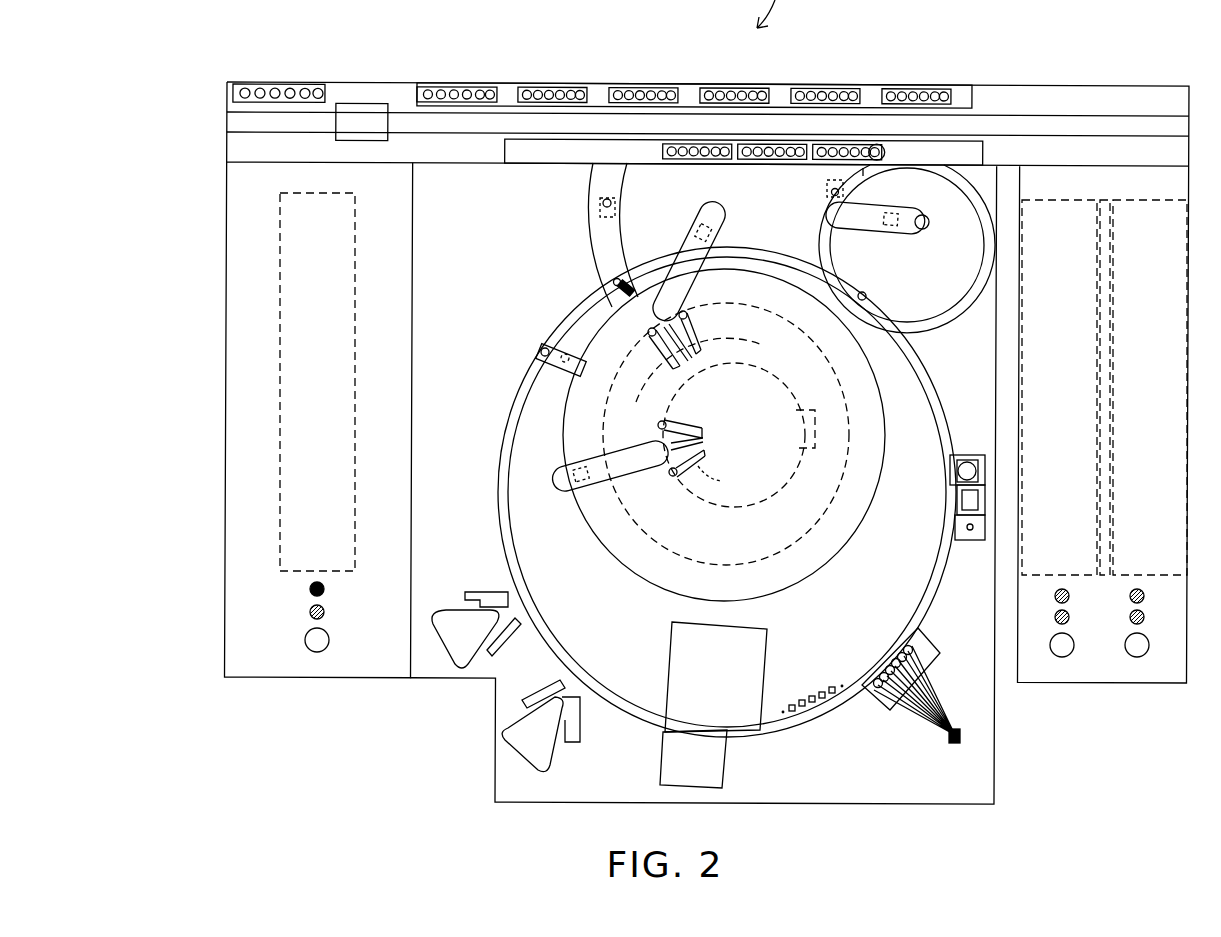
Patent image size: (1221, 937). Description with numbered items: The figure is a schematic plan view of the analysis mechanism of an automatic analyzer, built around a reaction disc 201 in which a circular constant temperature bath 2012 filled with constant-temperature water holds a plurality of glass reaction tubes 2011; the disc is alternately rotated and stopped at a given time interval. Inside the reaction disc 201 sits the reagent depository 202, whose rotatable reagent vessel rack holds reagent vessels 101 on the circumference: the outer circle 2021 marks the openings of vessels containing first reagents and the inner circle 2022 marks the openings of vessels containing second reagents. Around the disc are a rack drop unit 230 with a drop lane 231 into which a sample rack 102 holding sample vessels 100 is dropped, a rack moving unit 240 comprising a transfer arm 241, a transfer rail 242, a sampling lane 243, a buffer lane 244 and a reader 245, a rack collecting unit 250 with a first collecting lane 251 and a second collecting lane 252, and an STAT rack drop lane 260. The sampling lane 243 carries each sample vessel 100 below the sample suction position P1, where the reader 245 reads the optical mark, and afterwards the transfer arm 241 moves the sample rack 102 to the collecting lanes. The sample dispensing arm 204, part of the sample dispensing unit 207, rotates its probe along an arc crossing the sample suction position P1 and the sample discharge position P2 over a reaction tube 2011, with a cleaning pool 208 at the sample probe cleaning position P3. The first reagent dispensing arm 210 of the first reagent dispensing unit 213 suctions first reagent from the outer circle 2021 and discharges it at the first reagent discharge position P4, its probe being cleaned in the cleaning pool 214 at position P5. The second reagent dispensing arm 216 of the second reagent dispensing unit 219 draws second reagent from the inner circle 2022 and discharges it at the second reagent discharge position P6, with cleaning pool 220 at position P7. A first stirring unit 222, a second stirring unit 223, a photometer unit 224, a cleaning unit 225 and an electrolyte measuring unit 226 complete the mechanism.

The sample vessel 100 is at (869, 142).
The reagent vessel 101 is at (657, 362).
The sample rack 102 is at (826, 143).
The reaction disc 201 is at (783, 737).
The reagent depository 202 is at (838, 555).
The reaction tube 2011 is at (828, 712).
The constant temperature bath 2012 is at (738, 742).
The outer circle 2021 is at (845, 480).
The inner circle 2022 is at (792, 440).
The sample dispensing arm 204 is at (827, 226).
The sample dispensing unit 207 is at (888, 230).
The cleaning pool 208 is at (828, 186).
The first reagent dispensing arm 210 is at (731, 205).
The first reagent dispensing unit 213 is at (697, 232).
The cleaning pool 214 is at (590, 212).
The second reagent dispensing arm 216 is at (552, 470).
The second reagent dispensing unit 219 is at (597, 490).
The cleaning pool 220 is at (538, 364).
The first stirring unit 222 is at (455, 608).
The second stirring unit 223 is at (560, 752).
The photometer unit 224 is at (768, 680).
The cleaning unit 225 is at (890, 715).
The electrolyte measuring unit 226 is at (960, 455).
The rack drop unit 230 is at (227, 635).
The drop lane 231 is at (280, 380).
The rack moving unit 240 is at (1137, 90).
The transfer arm 241 is at (383, 103).
The transfer rail 242 is at (1082, 120).
The sampling lane 243 is at (595, 150).
The buffer lane 244 is at (454, 82).
The reader 245 is at (865, 172).
The rack collecting unit 250 is at (1135, 684).
The first collecting lane 251 is at (1088, 577).
The second collecting lane 252 is at (1142, 578).
The STAT rack drop lane 260 is at (233, 95).
The sample suction position P1 is at (886, 150).
The sample discharge position P2 is at (858, 300).
The sample probe cleaning position P3 is at (832, 192).
The first reagent discharge position P4 is at (615, 282).
The first reagent probe cleaning position P5 is at (603, 203).
The second reagent discharge position P6 is at (544, 350).
The second reagent probe cleaning position P7 is at (564, 355).